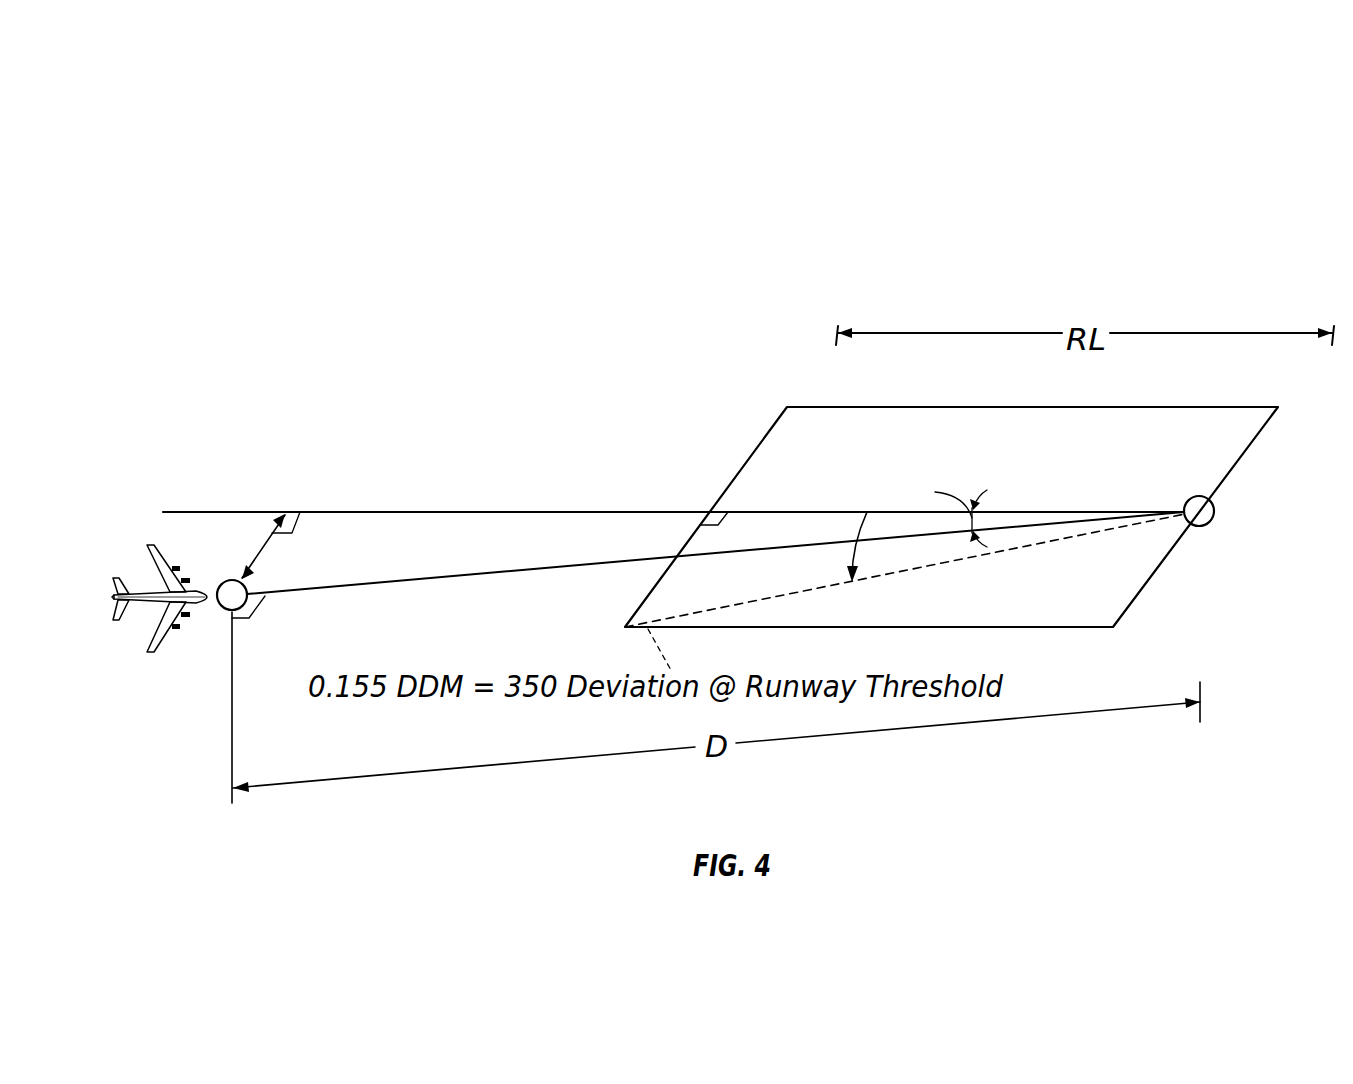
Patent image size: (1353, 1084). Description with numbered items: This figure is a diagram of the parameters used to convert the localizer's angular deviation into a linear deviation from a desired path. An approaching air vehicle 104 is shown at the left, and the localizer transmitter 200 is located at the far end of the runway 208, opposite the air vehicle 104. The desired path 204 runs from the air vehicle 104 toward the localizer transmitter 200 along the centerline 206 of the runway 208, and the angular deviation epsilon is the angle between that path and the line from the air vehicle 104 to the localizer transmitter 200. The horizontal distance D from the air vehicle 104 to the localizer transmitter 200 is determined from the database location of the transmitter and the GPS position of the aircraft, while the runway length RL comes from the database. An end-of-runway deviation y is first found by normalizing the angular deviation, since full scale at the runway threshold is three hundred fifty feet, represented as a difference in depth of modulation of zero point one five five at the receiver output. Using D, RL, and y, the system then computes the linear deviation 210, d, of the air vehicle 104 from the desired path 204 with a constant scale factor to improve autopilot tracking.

The air vehicle 104 is at (112, 577).
The localizer transmitter 200 is at (1215, 512).
The desired path 204 is at (470, 511).
The centerline 206 is at (838, 511).
The runway 208 is at (1115, 407).
The linear deviation 210 is at (262, 537).